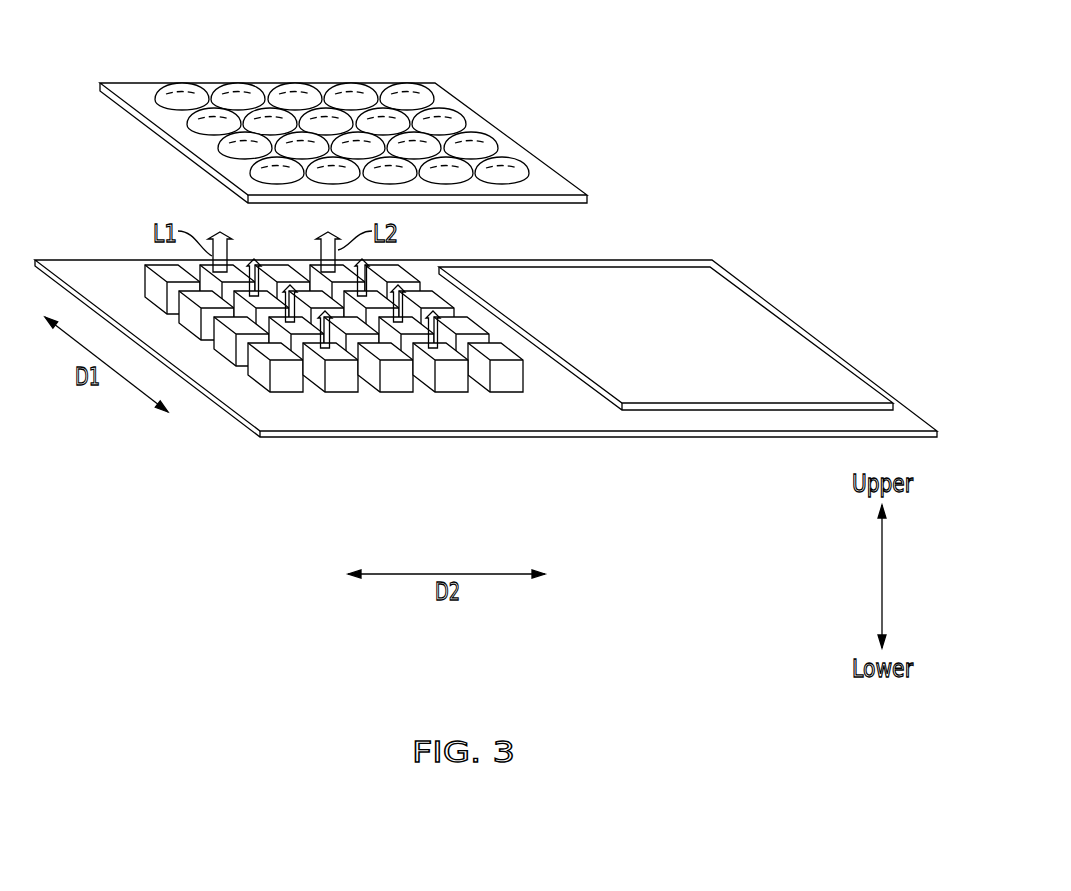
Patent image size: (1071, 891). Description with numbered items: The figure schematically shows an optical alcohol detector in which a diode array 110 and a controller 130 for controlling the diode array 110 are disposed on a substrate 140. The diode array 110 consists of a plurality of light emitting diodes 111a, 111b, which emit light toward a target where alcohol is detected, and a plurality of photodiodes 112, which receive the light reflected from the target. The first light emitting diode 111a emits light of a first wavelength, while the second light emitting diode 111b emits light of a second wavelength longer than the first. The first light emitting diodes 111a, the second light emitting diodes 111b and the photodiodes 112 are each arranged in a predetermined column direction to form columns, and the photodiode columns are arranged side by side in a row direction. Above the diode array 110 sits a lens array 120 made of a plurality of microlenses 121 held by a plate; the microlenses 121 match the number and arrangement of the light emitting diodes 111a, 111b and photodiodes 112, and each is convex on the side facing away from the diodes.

The diode array 110 is at (285, 417).
The first light emitting diode 111a is at (292, 388).
The second light emitting diode 111b is at (452, 387).
The photodiode 112 is at (503, 387).
The lens array 120 is at (313, 106).
The microlens 121 is at (394, 88).
The controller 130 is at (675, 280).
The substrate 140 is at (593, 418).